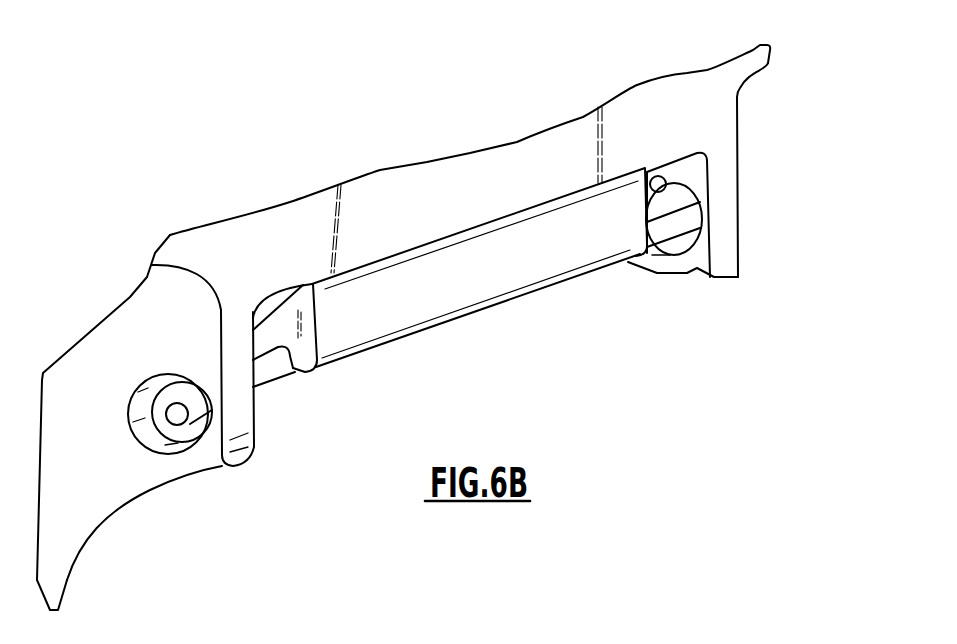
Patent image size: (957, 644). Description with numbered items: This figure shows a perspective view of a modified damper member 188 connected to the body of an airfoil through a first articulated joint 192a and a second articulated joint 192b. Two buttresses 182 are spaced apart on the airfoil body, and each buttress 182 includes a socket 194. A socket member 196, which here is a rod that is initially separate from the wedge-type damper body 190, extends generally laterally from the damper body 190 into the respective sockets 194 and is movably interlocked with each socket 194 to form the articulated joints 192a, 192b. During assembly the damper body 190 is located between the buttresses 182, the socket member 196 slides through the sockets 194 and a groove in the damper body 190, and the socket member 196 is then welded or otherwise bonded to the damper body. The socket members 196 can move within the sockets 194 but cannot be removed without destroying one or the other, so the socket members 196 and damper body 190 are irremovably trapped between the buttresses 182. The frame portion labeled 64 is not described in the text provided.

The frame body 64 is at (700, 112).
The buttress 182 is at (228, 337).
The damper member 188 is at (531, 300).
The damper body 190 is at (557, 227).
The first articulated joint 192a is at (127, 410).
The second articulated joint 192b is at (669, 268).
The socket 194 is at (175, 438).
The socket member 196 is at (190, 400).